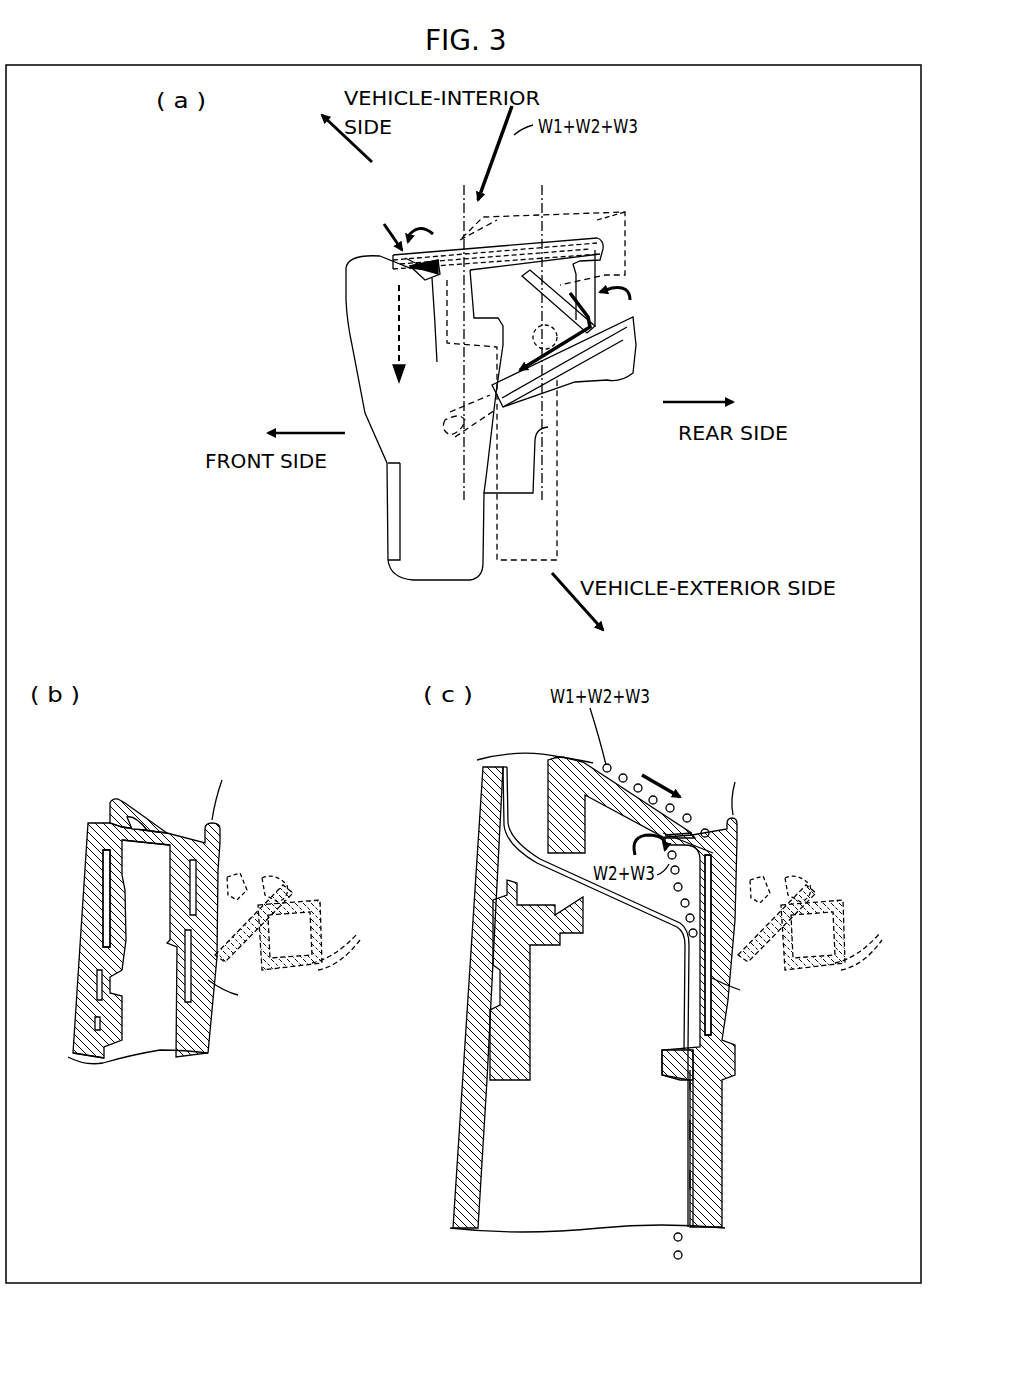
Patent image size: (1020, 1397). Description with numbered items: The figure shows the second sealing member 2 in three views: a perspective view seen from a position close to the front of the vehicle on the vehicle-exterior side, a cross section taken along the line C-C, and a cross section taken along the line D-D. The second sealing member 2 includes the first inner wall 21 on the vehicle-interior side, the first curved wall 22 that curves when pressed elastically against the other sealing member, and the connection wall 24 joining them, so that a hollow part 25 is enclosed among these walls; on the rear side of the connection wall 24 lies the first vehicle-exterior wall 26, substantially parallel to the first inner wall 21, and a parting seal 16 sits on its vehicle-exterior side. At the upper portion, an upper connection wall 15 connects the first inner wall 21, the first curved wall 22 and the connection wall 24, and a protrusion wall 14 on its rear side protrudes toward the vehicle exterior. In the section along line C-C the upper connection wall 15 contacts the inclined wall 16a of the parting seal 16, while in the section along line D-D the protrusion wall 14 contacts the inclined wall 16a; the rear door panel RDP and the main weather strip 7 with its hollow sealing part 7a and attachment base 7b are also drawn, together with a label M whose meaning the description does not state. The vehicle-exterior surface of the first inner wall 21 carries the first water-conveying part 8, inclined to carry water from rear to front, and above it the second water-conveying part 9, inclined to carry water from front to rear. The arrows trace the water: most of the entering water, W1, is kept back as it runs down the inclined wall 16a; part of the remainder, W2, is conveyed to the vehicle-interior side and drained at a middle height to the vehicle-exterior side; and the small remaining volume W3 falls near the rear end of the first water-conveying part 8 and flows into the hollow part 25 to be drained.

The second sealing member 2 is at (345, 285).
The main weather strip 7 is at (278, 872).
The hollow sealing part 7a is at (243, 876).
The attachment base 7b is at (312, 978).
The first water-conveying part 8 is at (585, 360).
The second water-conveying part 9 is at (552, 296).
The protrusion wall 14 is at (523, 250).
The upper connection wall 15 is at (447, 256).
The parting seal 16 is at (627, 245).
The inclined wall 16a is at (600, 225).
The first inner wall 21 is at (388, 252).
The first curved wall 22 is at (402, 263).
The connection wall 24 is at (432, 300).
The hollow part 25 is at (428, 275).
The first vehicle-exterior wall 26 is at (487, 441).
The molding M is at (90, 912).
The rear door panel RDP is at (506, 765).
The water W1 is at (418, 232).
The water W2 is at (635, 300).
The water W3 is at (560, 350).
The line C- C is at (462, 345).
The line D- D is at (541, 345).